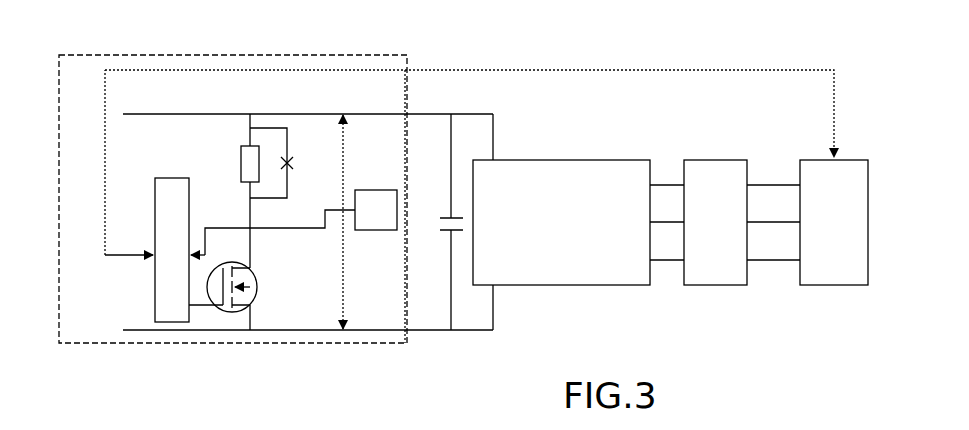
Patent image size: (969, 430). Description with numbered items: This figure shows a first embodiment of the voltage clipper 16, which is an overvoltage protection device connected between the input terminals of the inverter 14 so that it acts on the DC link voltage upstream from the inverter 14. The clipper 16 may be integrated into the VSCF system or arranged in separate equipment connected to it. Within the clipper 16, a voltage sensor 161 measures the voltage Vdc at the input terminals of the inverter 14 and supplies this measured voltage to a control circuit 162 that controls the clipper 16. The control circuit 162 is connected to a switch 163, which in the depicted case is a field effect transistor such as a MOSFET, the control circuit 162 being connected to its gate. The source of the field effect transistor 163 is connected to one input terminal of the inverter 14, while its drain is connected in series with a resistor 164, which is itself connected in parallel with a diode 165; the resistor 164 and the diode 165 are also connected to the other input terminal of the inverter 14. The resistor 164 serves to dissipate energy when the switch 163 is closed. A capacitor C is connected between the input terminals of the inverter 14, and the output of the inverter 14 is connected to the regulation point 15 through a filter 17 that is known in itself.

The inverter 14 is at (583, 287).
The regulation point 15 is at (820, 287).
The voltage clipper 16 is at (285, 345).
The filter 17 is at (700, 287).
The voltage sensor 161 is at (379, 232).
The control circuit 162 is at (152, 280).
The switch 163 is at (257, 290).
The resistor 164 is at (240, 165).
The diode 165 is at (289, 166).
The capacitor C is at (440, 222).